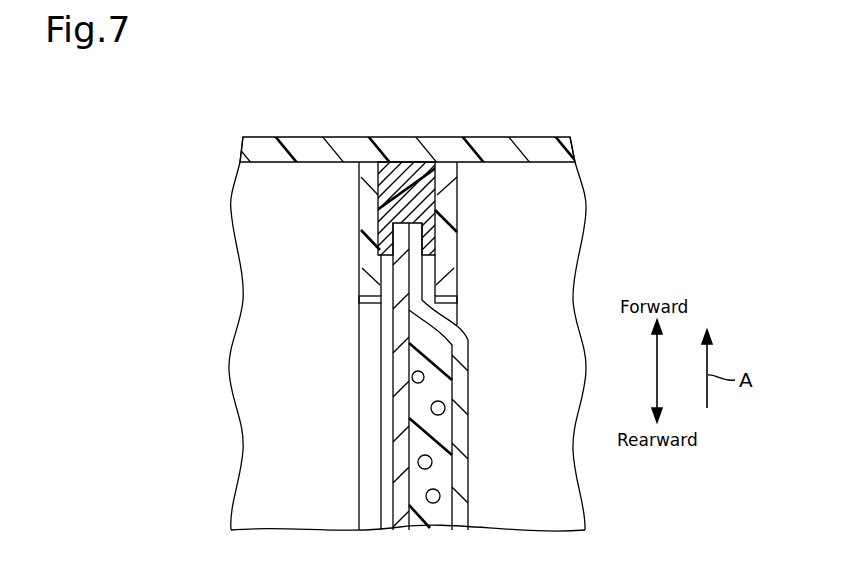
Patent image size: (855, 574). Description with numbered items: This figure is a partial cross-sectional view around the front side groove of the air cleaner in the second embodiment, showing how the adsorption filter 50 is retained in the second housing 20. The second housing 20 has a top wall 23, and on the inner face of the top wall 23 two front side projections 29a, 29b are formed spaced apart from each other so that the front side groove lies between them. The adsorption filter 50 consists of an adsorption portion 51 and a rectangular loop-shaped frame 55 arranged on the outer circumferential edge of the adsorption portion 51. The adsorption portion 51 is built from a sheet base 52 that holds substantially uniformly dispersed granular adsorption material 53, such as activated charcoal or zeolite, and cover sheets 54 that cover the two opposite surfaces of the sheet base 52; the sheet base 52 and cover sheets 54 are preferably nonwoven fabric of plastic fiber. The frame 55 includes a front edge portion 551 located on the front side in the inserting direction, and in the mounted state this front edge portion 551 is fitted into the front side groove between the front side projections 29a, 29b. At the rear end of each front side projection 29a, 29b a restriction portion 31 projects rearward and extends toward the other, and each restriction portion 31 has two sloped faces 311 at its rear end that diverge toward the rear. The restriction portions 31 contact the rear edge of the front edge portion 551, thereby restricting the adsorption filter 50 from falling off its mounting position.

The second housing 20 is at (405, 294).
The top wall 23 is at (497, 137).
The front side projection 29a is at (457, 205).
The front side projection 29b is at (359, 205).
The restriction portion 31 is at (397, 293).
The sloped face 311 is at (390, 314).
The adsorption filter 50 is at (509, 376).
The adsorption portion 51 is at (482, 376).
The sheet base 52 is at (528, 362).
The granular adsorption material 53 is at (427, 407).
The cover sheet 54 is at (412, 352).
The frame 55 is at (412, 177).
The front edge portion 551 is at (412, 162).